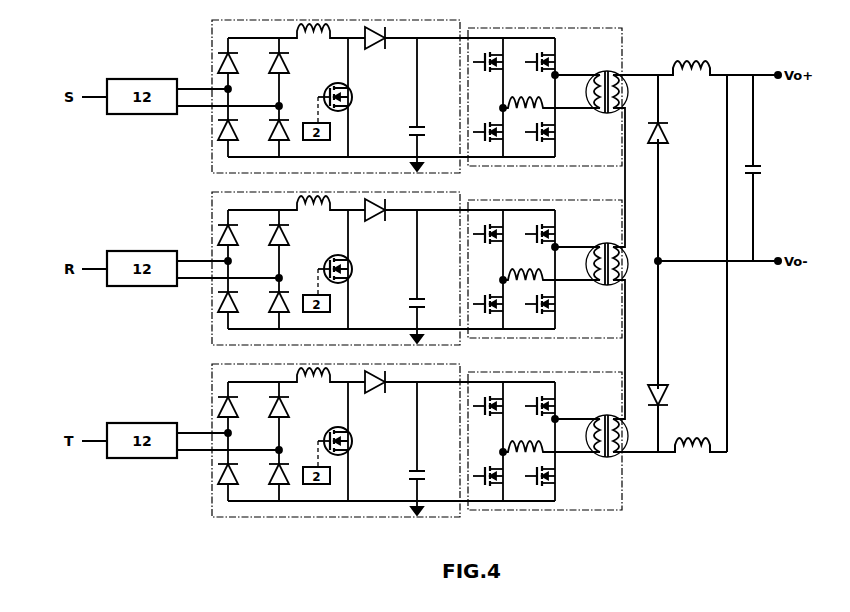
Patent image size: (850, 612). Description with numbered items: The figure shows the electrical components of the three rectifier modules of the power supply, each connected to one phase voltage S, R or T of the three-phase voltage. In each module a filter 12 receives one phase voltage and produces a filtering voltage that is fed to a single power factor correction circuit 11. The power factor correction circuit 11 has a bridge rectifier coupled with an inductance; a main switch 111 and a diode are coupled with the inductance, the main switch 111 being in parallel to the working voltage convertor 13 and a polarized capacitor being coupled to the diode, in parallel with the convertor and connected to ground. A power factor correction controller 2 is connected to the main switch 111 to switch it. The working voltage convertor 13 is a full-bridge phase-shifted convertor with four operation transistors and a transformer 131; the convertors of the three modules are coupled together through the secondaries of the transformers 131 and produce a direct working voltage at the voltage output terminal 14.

The single power factor correction circuit 11 is at (215, 50).
The main switch 111 is at (351, 100).
The filter 12 is at (194, 268).
The working voltage convertor 13 is at (615, 24).
The transformer 131 is at (604, 71).
The voltage output terminal 14 is at (772, 168).
The power factor correction controller 2 is at (316, 290).